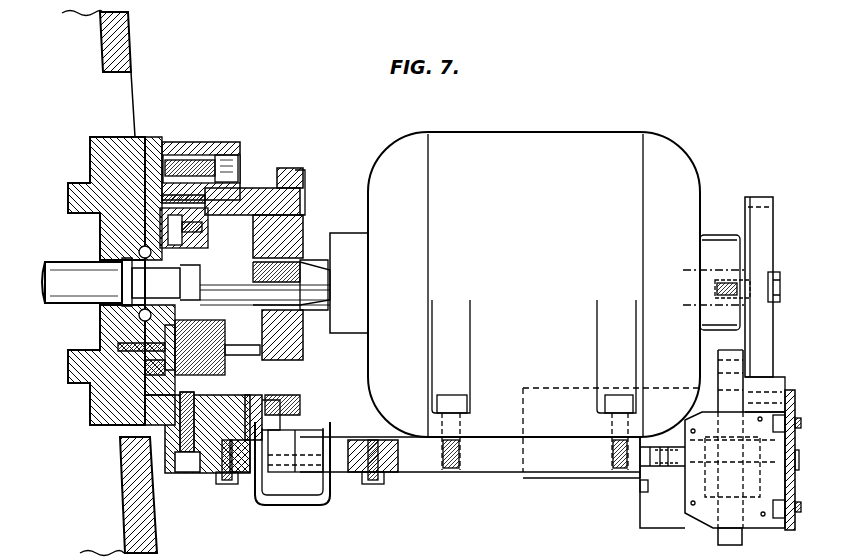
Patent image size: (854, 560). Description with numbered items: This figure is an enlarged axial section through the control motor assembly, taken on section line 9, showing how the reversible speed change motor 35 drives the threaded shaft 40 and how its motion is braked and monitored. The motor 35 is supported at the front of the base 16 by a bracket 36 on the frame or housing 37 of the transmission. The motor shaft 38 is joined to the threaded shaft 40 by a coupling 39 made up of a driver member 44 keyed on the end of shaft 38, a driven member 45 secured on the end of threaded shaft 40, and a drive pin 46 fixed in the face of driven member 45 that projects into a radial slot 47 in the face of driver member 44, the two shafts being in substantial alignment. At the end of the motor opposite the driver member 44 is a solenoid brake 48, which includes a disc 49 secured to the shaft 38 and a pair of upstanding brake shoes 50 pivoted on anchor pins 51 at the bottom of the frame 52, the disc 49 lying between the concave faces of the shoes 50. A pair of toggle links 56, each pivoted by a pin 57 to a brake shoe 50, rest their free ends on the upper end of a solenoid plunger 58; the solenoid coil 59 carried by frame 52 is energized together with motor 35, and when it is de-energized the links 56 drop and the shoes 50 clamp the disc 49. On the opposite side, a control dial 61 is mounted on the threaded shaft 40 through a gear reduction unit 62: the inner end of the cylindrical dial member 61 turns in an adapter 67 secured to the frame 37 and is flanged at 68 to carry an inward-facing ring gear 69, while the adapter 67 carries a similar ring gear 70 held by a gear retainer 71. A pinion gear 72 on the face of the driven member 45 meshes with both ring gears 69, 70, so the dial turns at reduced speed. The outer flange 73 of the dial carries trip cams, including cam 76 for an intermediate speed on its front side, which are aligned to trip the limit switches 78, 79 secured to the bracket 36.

The section line 9 is at (316, 559).
The base 16 is at (157, 506).
The speed change motor 35 is at (580, 142).
The bracket 36 is at (485, 473).
The frame or housing 37 is at (92, 424).
The shaft 38 is at (312, 290).
The coupling 39 is at (293, 232).
The threaded shaft 40 is at (92, 302).
The driver member 44 is at (304, 338).
The driven member 45 is at (218, 375).
The drive pin 46 is at (240, 365).
The radial slot 47 is at (266, 320).
The solenoid brake 48 is at (786, 269).
The disc 49 is at (757, 196).
The brake shoes 50 is at (775, 382).
The anchor pins 51 is at (665, 468).
The frame 52 is at (642, 514).
The toggle links 56 is at (712, 383).
The pin 57 is at (710, 360).
The solenoid plunger 58 is at (740, 540).
The solenoid coil 59 is at (705, 497).
The control dial 61 is at (282, 167).
The gear reduction unit 62 is at (180, 194).
The adapter 67 is at (190, 143).
The flange 68 is at (218, 168).
The ring gear 69 is at (235, 202).
The ring gear 70 is at (146, 200).
The gear retainer 71 is at (150, 362).
The pinion gear 72 is at (160, 222).
The flange 73 is at (304, 176).
The trip cam 76 is at (312, 420).
The limit switch 78 is at (275, 470).
The limit switch 79 is at (305, 470).